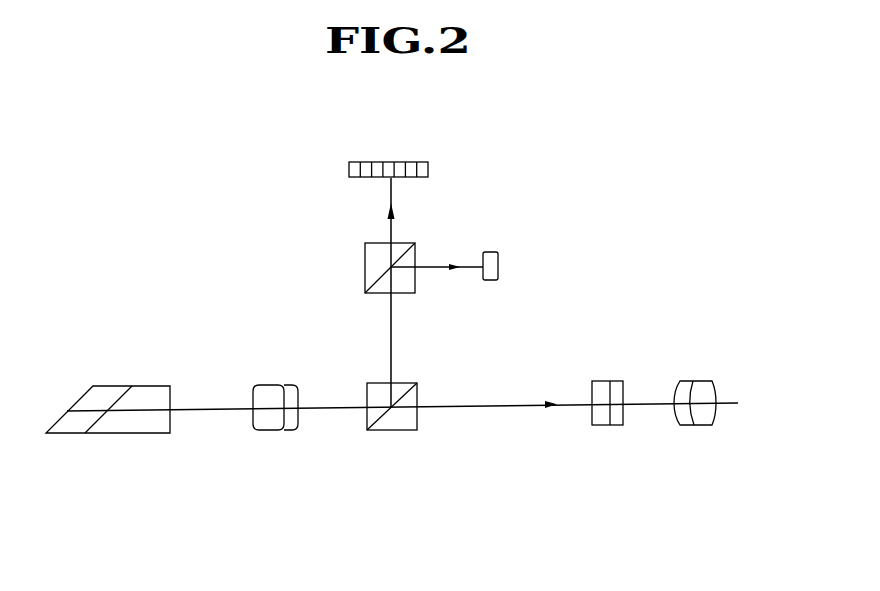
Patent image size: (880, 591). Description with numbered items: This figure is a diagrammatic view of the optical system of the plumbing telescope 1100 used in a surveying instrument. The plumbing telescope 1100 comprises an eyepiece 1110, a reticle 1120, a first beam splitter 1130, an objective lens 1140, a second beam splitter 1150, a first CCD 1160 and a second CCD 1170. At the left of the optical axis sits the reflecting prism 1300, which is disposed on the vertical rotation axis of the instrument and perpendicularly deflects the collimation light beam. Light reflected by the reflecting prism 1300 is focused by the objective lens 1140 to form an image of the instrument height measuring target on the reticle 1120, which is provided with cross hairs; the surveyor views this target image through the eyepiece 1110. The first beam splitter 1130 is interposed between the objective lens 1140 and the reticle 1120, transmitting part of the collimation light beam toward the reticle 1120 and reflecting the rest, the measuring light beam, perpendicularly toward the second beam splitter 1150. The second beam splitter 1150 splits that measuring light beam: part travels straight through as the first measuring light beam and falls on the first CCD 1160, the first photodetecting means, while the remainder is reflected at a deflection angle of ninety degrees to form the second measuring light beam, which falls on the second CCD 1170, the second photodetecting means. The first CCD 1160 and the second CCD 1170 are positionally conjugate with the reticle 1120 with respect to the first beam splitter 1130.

The plumbing telescope 1100 is at (489, 444).
The eyepiece 1110 is at (708, 378).
The reticle 1120 is at (608, 380).
The first beam splitter 1130 is at (400, 422).
The objective lens 1140 is at (274, 388).
The second beam splitter 1150 is at (407, 280).
The first CCD 1160 is at (412, 158).
The second CCD 1170 is at (493, 263).
The reflecting prism 1300 is at (150, 423).